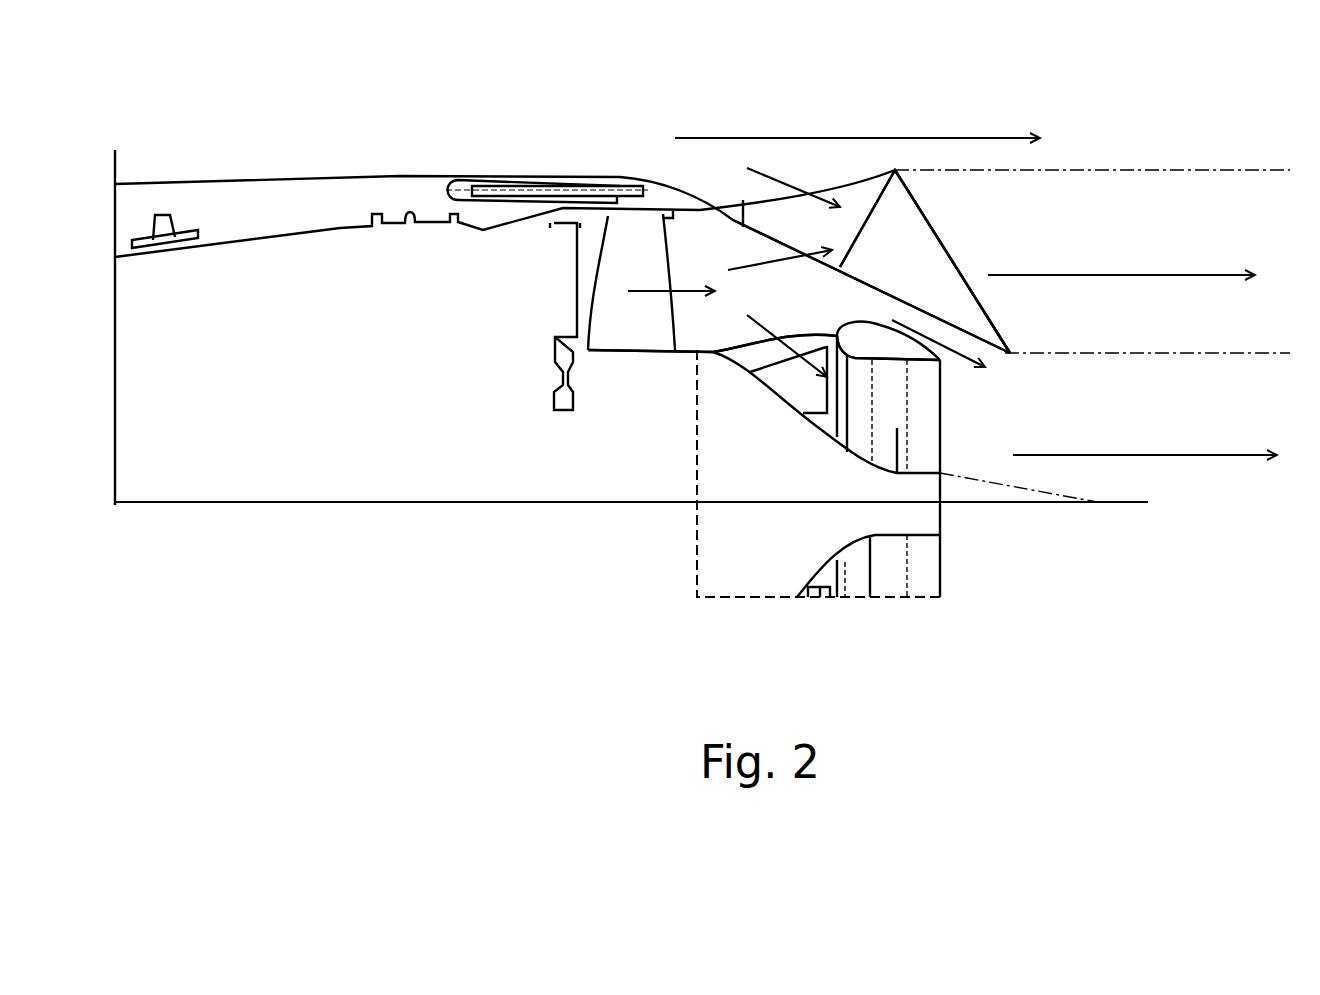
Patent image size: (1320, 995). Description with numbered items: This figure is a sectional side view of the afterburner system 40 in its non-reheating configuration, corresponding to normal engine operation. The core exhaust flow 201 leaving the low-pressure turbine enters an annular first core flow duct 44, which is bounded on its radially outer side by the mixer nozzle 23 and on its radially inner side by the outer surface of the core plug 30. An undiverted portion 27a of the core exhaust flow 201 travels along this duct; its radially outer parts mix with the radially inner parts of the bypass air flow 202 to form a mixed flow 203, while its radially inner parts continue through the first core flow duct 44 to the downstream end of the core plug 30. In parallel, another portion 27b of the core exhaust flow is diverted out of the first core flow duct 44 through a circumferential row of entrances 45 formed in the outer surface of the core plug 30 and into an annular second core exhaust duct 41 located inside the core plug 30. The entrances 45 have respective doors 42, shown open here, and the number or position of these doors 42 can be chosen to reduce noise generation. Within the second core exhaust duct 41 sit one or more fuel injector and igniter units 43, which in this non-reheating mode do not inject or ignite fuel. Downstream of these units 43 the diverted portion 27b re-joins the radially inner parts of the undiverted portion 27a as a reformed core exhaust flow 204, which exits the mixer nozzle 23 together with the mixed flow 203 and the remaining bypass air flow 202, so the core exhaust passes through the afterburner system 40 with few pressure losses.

The core exhaust flow 201 is at (650, 291).
The bypass air flow 202 is at (752, 137).
The mixed flow 203 is at (1167, 273).
The reformed core exhaust flow 204 is at (1200, 458).
The undiverted portion of the core exhaust flow 27a is at (740, 268).
The diverted portion of the core exhaust flow 27b is at (803, 365).
The mixer nozzle 23 is at (890, 210).
The first core flow duct 44 is at (875, 310).
The entrances 45 is at (818, 335).
The doors 42 is at (730, 352).
The second core exhaust duct 41 is at (830, 425).
The fuel injector and igniter units 43 is at (900, 425).
The core plug 30 is at (733, 567).
The afterburner system 40 is at (1053, 577).